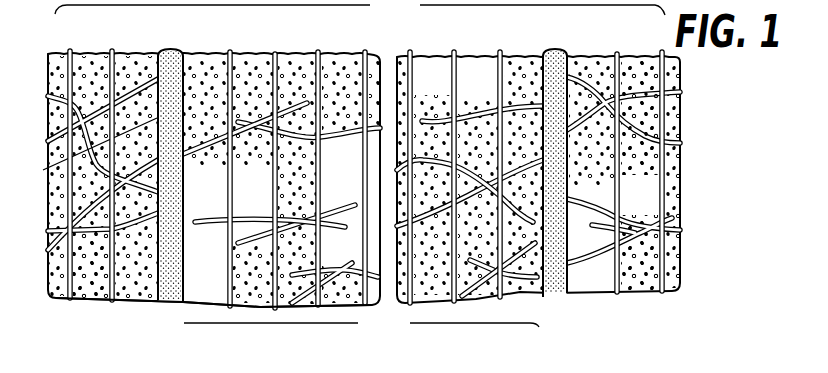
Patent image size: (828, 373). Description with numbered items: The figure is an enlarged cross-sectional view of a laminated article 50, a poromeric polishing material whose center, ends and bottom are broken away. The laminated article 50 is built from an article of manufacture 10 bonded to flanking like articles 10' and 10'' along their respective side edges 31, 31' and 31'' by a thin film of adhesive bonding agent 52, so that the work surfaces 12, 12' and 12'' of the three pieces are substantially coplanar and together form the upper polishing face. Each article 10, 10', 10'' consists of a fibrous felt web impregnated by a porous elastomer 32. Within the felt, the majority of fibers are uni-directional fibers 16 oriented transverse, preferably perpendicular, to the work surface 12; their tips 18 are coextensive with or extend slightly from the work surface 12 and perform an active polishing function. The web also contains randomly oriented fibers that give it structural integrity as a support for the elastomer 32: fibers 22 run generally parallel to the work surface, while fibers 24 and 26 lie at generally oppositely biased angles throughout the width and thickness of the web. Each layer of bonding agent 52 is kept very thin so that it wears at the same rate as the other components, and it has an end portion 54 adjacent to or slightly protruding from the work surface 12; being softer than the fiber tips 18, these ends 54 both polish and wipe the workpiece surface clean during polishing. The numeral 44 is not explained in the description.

The laminated article 50 is at (413, 22).
The work surface 12' is at (214, 157).
The work surface 12 is at (538, 157).
The work surface 12'' is at (634, 96).
The end portion 54 is at (173, 50).
The bonding agent 52 is at (174, 277).
The side edge 31 is at (363, 160).
The side edge 31' is at (83, 153).
The side edge 31'' is at (695, 171).
The tips 18 is at (307, 53).
The randomly oriented fibers 24 is at (185, 152).
The randomly oriented fibers 22 is at (222, 219).
The randomly oriented fibers 26 is at (533, 207).
The uni-directional fibers 16 is at (448, 302).
The article of manufacture 10 is at (361, 327).
The article of manufacture 10' is at (86, 285).
The article of manufacture 10'' is at (627, 277).
The porous elastomer 32 is at (196, 300).
The layer 44 is at (472, 368).